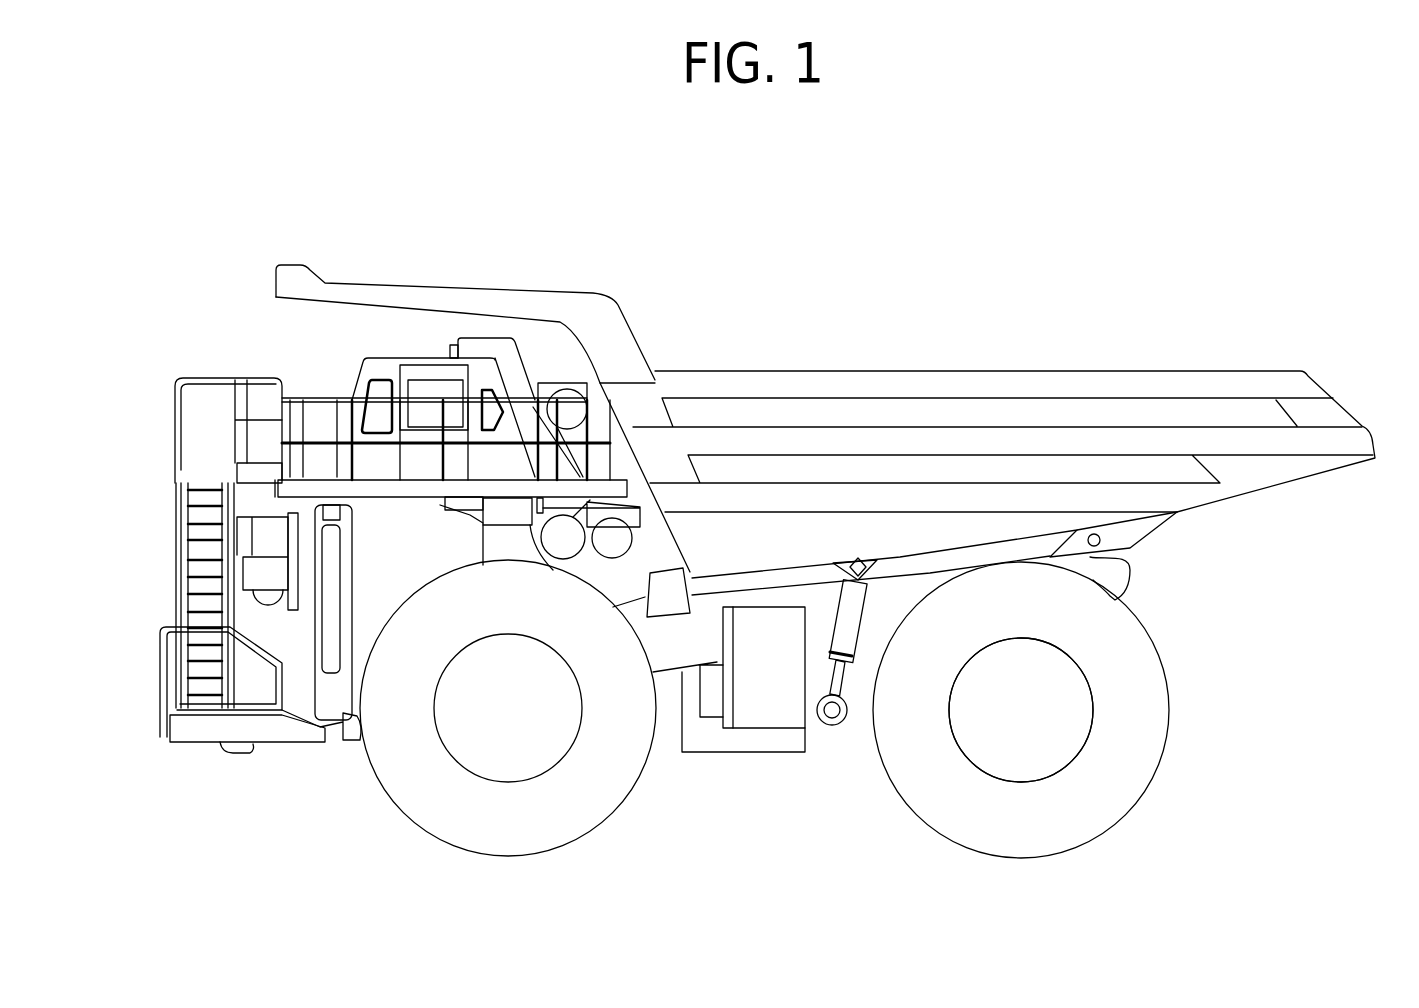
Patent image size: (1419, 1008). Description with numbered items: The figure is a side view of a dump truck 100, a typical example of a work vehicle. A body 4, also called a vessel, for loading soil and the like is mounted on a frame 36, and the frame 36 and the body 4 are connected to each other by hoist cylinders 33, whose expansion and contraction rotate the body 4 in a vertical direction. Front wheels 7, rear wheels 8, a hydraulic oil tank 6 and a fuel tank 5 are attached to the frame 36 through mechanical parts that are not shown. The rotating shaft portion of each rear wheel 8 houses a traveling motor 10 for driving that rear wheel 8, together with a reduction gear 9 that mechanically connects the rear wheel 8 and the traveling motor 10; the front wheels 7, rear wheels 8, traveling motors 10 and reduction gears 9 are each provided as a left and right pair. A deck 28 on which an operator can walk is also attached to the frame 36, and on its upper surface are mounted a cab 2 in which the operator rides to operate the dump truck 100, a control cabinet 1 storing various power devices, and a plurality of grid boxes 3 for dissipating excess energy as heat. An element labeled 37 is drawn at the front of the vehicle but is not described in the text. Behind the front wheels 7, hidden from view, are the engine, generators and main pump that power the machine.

The dump truck 100 is at (908, 199).
The control cabinet 1 is at (485, 337).
The cab 2 is at (383, 357).
The grid boxes 3 is at (550, 412).
The body 4 is at (1097, 371).
The fuel tank 5 is at (710, 753).
The hydraulic oil tank 6 is at (780, 730).
The front wheels 7 is at (390, 795).
The rear wheels 8 is at (1147, 795).
The reduction gear 9 is at (1077, 707).
The traveling motor 10 is at (1118, 710).
The deck 28 is at (613, 475).
The hoist cylinders 33 is at (862, 628).
The frame 36 is at (877, 560).
The ladder 37 is at (203, 707).